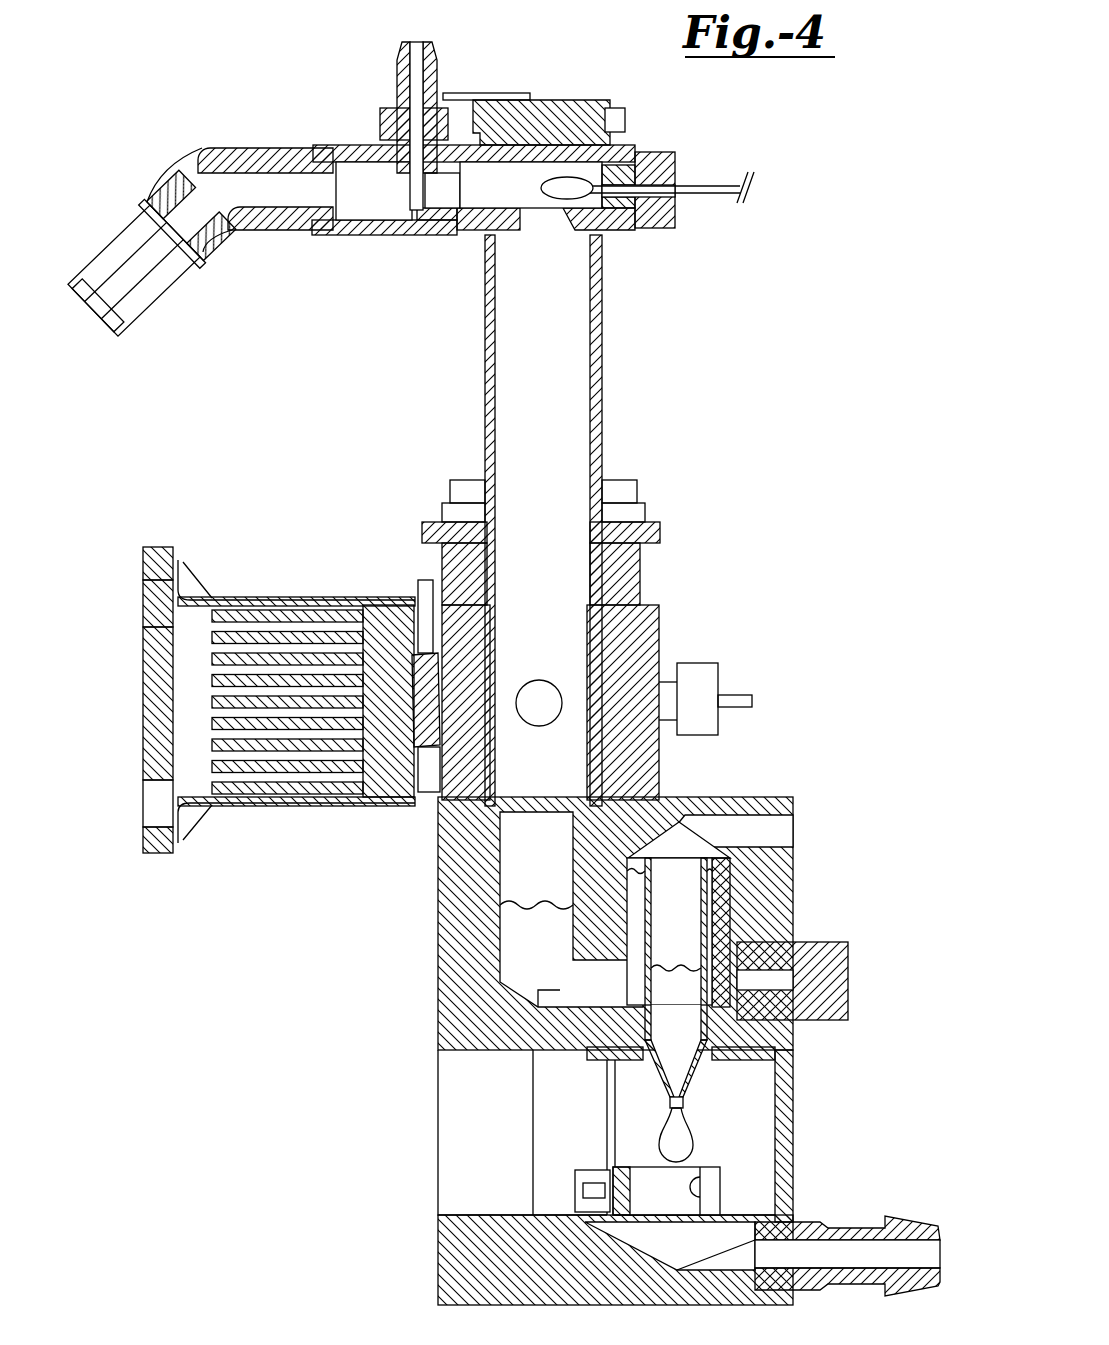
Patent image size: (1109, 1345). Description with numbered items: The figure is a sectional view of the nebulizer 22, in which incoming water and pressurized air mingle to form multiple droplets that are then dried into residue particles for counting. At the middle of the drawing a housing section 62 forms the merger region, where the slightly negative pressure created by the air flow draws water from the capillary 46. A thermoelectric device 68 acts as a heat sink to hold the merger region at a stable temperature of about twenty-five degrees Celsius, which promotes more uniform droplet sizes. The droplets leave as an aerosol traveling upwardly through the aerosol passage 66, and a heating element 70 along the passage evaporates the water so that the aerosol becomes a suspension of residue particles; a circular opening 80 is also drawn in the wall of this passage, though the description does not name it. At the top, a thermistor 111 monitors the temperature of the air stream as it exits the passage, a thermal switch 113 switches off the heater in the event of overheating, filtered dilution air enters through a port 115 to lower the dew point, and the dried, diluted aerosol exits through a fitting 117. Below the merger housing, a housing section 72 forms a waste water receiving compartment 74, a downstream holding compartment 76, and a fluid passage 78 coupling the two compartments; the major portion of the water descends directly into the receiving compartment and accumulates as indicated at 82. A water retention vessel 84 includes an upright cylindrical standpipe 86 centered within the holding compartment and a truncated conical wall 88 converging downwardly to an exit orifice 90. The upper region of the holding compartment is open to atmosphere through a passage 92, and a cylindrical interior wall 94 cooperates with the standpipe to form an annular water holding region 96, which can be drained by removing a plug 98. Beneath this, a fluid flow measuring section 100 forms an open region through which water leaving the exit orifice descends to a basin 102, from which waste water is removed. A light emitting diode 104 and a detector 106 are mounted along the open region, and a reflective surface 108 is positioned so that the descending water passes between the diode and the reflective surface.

The nebulizer 22 is at (598, 938).
The capillary 46 is at (752, 700).
The housing section 62 is at (661, 622).
The aerosol passage 66 is at (523, 490).
The thermoelectric device 68 is at (412, 708).
The heating element 70 is at (487, 383).
The housing section 72 is at (637, 934).
The waste water receiving compartment 74 is at (522, 870).
The holding compartment 76 is at (712, 862).
The fluid passage 78 is at (587, 992).
The port 80 is at (496, 766).
The accumulated water 82 is at (527, 900).
The water retention vessel 84 is at (725, 888).
The standpipe 86 is at (650, 872).
The truncated conical wall 88 is at (697, 1083).
The exit orifice 90 is at (671, 1103).
The passage 92 is at (795, 826).
The cylindrical interior wall 94 is at (628, 937).
The annular water holding region 96 is at (727, 947).
The plug 98 is at (848, 1000).
The fluid flow measuring section 100 is at (793, 1178).
The basin 102 is at (630, 1250).
The light emitting diode 104 is at (572, 1192).
The detector 106 is at (620, 1165).
The reflective surface 108 is at (690, 1180).
The thermistor 111 is at (590, 212).
The thermal switch 113 is at (582, 102).
The port 115 is at (403, 47).
The fitting 117 is at (104, 230).